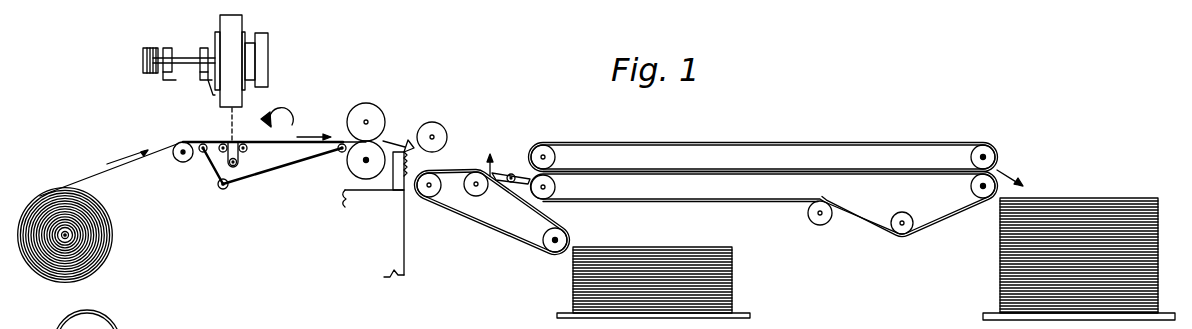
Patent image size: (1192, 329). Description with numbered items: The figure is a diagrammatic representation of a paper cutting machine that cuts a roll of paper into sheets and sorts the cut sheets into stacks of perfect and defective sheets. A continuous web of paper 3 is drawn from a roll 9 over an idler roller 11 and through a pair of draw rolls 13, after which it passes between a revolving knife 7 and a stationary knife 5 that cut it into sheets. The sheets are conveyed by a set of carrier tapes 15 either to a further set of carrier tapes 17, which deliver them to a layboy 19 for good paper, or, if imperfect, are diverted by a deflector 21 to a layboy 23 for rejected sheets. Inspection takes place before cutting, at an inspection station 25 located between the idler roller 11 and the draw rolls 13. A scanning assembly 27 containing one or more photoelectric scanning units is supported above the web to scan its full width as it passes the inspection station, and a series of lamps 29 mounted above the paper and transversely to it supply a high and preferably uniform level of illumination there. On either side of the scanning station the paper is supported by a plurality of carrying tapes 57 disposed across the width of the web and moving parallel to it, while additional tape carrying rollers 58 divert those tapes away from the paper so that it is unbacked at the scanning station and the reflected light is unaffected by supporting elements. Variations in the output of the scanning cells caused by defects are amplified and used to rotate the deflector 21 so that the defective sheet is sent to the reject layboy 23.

The web of paper 3 is at (127, 164).
The stationary knife 5 is at (407, 149).
The revolving knife 7 is at (437, 122).
The roll 9 is at (113, 250).
The idler roller 11 is at (181, 164).
The draw rolls 13 is at (375, 109).
The carrier tapes 15 is at (489, 221).
The further set of carrier tapes 17 is at (658, 143).
The layboy for good paper 19 is at (997, 309).
The deflector 21 is at (499, 171).
The layboy for rejected sheets 23 is at (572, 310).
The inspection station 25 is at (236, 118).
The scanning assembly 27 is at (228, 97).
The lamps 29 is at (296, 124).
The carrying tapes 57 is at (288, 175).
The tape carrying rollers 58 is at (245, 158).